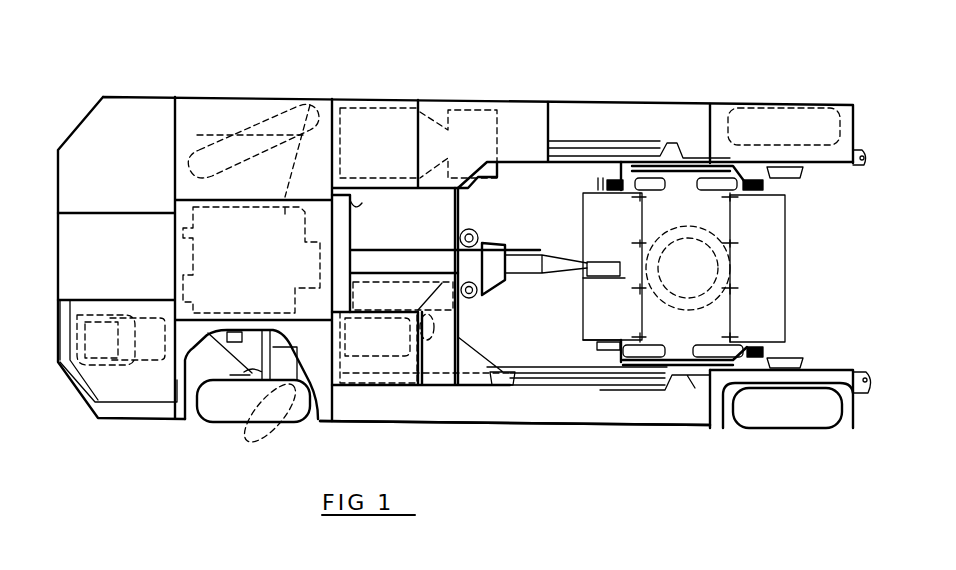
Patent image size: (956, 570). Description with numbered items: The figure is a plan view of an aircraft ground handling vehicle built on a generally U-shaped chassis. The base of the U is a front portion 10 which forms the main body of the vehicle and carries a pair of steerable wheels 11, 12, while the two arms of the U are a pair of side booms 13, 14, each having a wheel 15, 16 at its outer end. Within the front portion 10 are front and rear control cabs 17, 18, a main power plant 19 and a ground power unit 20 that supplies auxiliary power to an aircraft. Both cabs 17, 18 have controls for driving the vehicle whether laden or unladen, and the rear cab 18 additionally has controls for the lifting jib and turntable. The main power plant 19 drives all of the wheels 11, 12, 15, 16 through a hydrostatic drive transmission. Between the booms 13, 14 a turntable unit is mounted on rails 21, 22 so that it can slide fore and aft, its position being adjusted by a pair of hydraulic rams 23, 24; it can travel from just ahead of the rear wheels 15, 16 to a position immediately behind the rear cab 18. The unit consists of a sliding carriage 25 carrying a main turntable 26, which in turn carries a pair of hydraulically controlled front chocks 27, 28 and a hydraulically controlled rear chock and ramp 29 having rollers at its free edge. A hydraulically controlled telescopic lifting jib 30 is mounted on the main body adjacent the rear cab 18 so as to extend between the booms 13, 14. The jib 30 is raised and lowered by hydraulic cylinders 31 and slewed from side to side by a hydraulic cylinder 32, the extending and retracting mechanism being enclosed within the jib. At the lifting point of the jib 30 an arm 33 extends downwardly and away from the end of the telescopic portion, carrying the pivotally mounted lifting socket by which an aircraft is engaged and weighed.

The front portion 10 is at (165, 84).
The steerable wheel 11 is at (256, 108).
The steerable wheel 12 is at (233, 407).
The side boom 13 is at (572, 105).
The side boom 14 is at (497, 426).
The wheel 15 is at (797, 122).
The wheel 16 is at (812, 430).
The front control cab 17 is at (122, 393).
The rear control cab 18 is at (382, 362).
The main power plant 19 is at (323, 100).
The ground power unit 20 is at (403, 118).
The rail 21 is at (605, 207).
The rail 22 is at (583, 372).
The hydraulic ram 23 is at (652, 143).
The hydraulic ram 24 is at (548, 382).
The sliding carriage 25 is at (695, 163).
The main turntable 26 is at (650, 267).
The front chock 27 is at (613, 183).
The front chock 28 is at (600, 340).
The rear chock and ramp 29 is at (745, 350).
The telescopic lifting jib 30 is at (528, 272).
The hydraulic cylinders 31 is at (472, 298).
The hydraulic cylinder 32 is at (378, 250).
The arm 33 is at (597, 270).